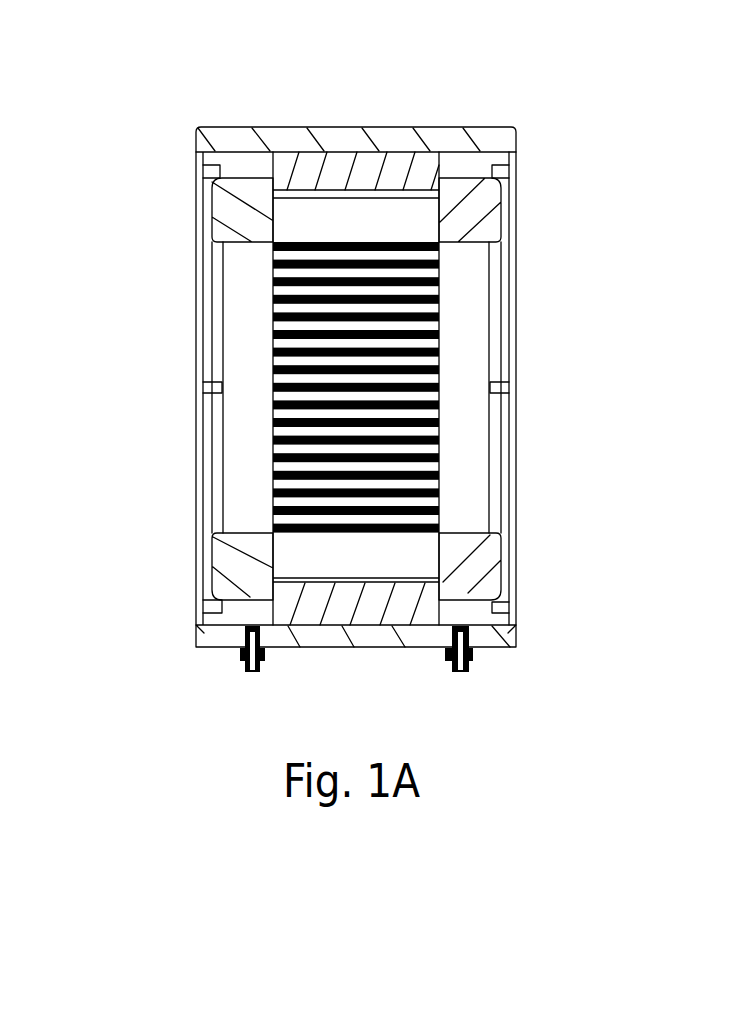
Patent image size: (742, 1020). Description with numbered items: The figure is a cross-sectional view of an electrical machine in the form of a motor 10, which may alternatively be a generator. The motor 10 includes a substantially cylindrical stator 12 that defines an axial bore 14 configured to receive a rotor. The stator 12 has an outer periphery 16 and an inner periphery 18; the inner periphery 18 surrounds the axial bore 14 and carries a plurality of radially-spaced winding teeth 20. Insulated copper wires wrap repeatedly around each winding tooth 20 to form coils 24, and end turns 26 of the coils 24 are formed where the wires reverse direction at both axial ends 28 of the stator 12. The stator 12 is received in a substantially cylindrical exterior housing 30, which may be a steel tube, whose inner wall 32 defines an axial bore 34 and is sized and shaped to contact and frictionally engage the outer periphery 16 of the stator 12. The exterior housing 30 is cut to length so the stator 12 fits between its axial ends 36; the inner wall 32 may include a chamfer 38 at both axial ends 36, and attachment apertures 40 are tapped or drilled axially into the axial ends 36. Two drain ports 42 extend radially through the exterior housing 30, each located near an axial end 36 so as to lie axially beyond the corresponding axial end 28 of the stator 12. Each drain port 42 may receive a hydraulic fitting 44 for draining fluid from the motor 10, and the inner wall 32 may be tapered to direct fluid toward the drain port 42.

The motor 10 is at (497, 85).
The stator 12 is at (332, 178).
The axial bore 14 is at (469, 423).
The outer periphery 16 is at (303, 159).
The inner periphery 18 is at (300, 500).
The winding teeth 20 is at (298, 344).
The coils 24 is at (258, 577).
The end turns 26 is at (497, 572).
The axial ends 28 is at (457, 160).
The exterior housing 30 is at (403, 136).
The inner wall 32 is at (253, 129).
The axial bore 34 is at (538, 245).
The axial ends 36 is at (166, 128).
The chamfer 38 is at (196, 150).
The attachment apertures 40 is at (201, 611).
The drain port 42 is at (240, 678).
The hydraulic fitting 44 is at (443, 672).